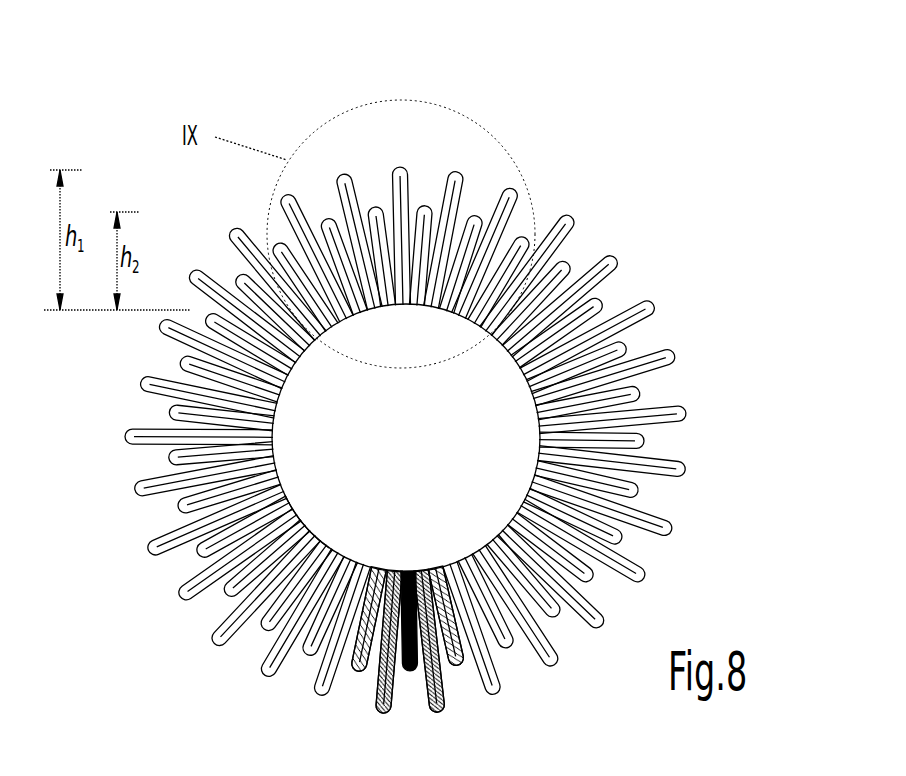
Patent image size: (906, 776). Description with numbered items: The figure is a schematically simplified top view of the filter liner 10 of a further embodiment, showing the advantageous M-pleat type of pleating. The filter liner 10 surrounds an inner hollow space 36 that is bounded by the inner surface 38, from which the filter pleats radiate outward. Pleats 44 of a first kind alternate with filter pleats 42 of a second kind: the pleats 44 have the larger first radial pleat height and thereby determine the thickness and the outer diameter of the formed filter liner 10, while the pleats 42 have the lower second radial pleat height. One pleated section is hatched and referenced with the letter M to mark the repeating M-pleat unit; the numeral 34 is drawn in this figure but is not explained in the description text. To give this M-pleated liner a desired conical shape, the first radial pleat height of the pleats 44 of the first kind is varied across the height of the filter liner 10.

The filter liner 10 is at (453, 377).
The fin 34 is at (443, 710).
The inner hollow space 36 is at (413, 493).
The inner surface 38 is at (288, 545).
The filter pleats of a second kind 42 is at (356, 168).
The pleats of a first kind 44 is at (401, 168).